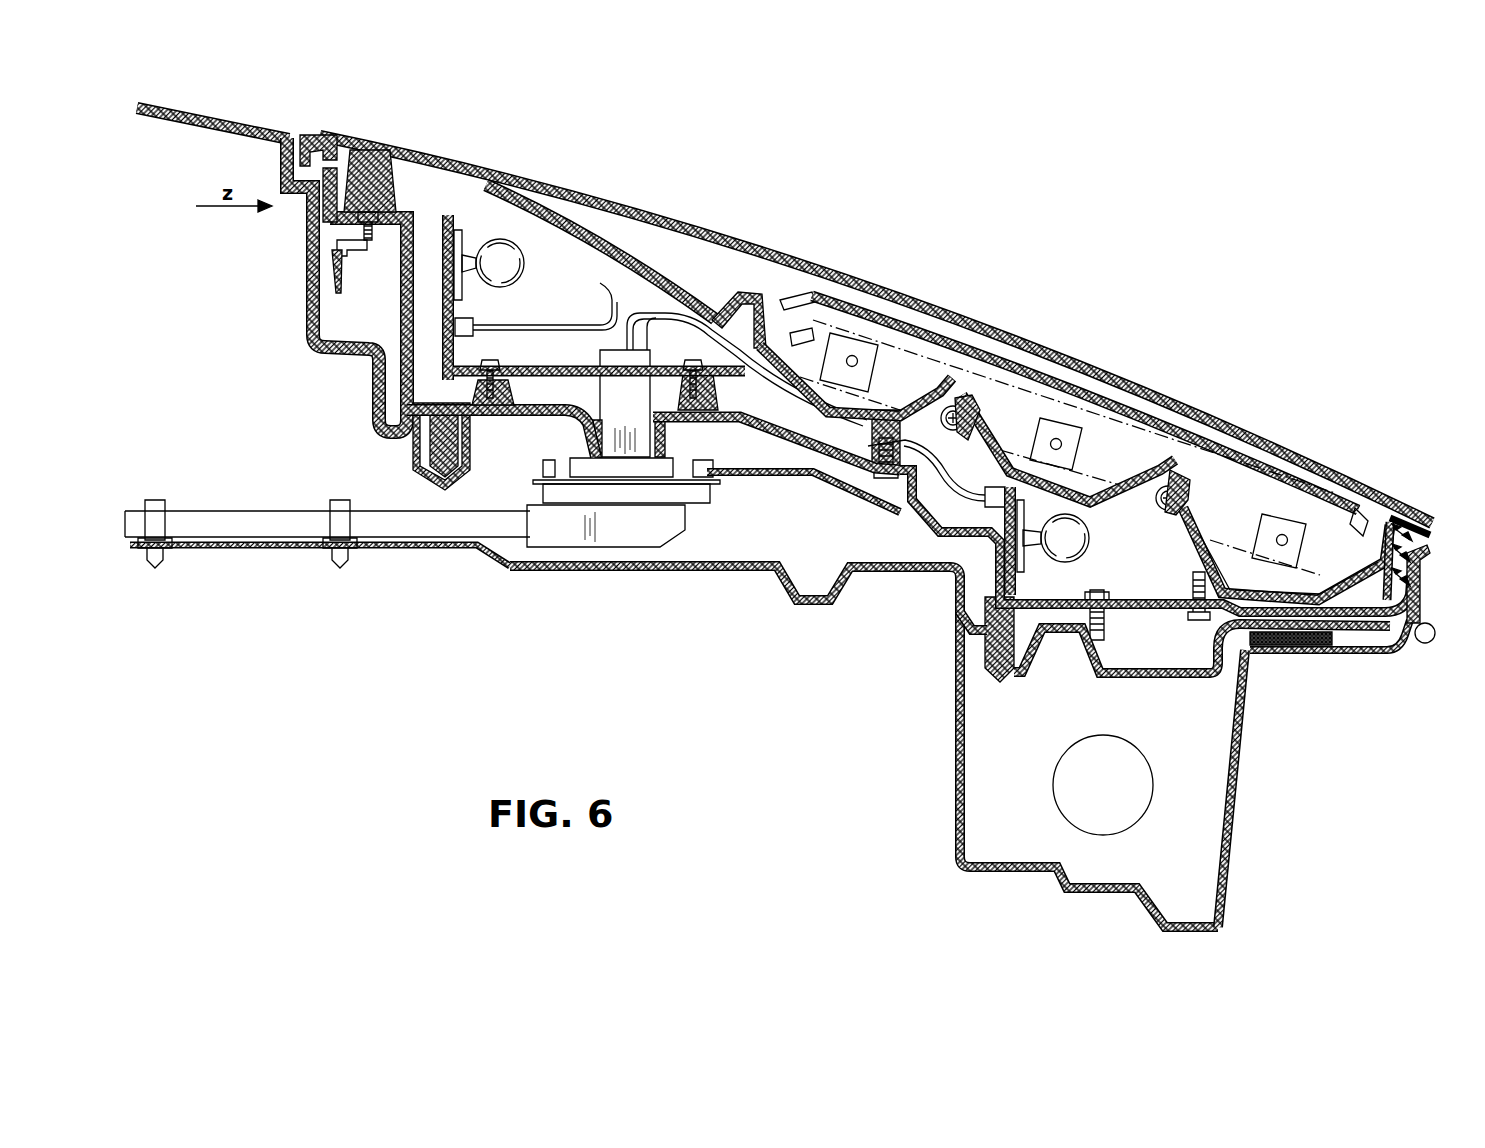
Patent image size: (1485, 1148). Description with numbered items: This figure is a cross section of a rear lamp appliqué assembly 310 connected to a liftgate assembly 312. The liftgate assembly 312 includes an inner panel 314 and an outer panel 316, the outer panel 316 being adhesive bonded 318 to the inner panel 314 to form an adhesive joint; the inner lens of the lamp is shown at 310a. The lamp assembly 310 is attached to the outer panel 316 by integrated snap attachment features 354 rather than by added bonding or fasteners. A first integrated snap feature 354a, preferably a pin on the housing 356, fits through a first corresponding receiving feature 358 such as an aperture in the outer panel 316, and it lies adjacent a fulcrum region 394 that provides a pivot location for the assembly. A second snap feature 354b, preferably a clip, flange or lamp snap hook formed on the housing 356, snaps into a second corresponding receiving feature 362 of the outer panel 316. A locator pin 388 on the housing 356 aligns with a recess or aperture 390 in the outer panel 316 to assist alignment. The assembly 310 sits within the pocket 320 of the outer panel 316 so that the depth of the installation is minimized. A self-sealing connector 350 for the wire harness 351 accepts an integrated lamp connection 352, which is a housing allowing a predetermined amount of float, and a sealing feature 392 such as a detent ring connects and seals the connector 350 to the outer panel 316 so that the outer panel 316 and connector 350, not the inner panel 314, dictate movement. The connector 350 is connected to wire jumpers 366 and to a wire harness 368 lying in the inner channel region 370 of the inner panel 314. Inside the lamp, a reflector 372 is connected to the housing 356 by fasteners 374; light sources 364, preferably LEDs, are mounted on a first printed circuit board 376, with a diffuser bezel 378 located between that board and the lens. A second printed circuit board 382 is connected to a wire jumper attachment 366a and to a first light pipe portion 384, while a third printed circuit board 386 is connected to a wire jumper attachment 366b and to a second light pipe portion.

The rear lamp appliqué assembly 310 is at (676, 178).
The inner lens 310a is at (1025, 332).
The liftgate assembly 312 is at (1262, 842).
The inner panel 314 is at (960, 800).
The outer panel 316 is at (373, 395).
The adhesive bond 318 is at (1300, 650).
The pocket 320 is at (1430, 540).
The self-sealing connector 350 is at (636, 490).
The wire harness 351 is at (457, 530).
The integrated lamp connection 352 is at (695, 440).
The integrated snap attachment feature 354 is at (345, 278).
The first integrated snap feature 354a is at (333, 262).
The second snap feature 354b is at (1407, 645).
The housing 356 is at (392, 356).
The first corresponding receiving feature 358 is at (335, 246).
The second corresponding receiving feature 362 is at (1410, 535).
The light source 364 is at (870, 360).
The wire jumper 366 is at (605, 310).
The wire jumper attachment 366a is at (500, 332).
The wire jumper attachment 366b is at (985, 485).
The wire harness 368 is at (1100, 835).
The inner channel region 370 is at (1208, 900).
The reflector 372 is at (665, 277).
The fastener 374 is at (373, 176).
The first printed circuit board 376 is at (820, 300).
The diffuser bezel 378 is at (868, 316).
The second printed circuit board 382 is at (462, 313).
The first light pipe portion 384 is at (500, 250).
The third printed circuit board 386 is at (1092, 545).
The locator pin 388 is at (432, 505).
The recess or aperture 390 is at (470, 455).
The sealing feature 392 is at (718, 487).
The fulcrum region 394 is at (308, 122).